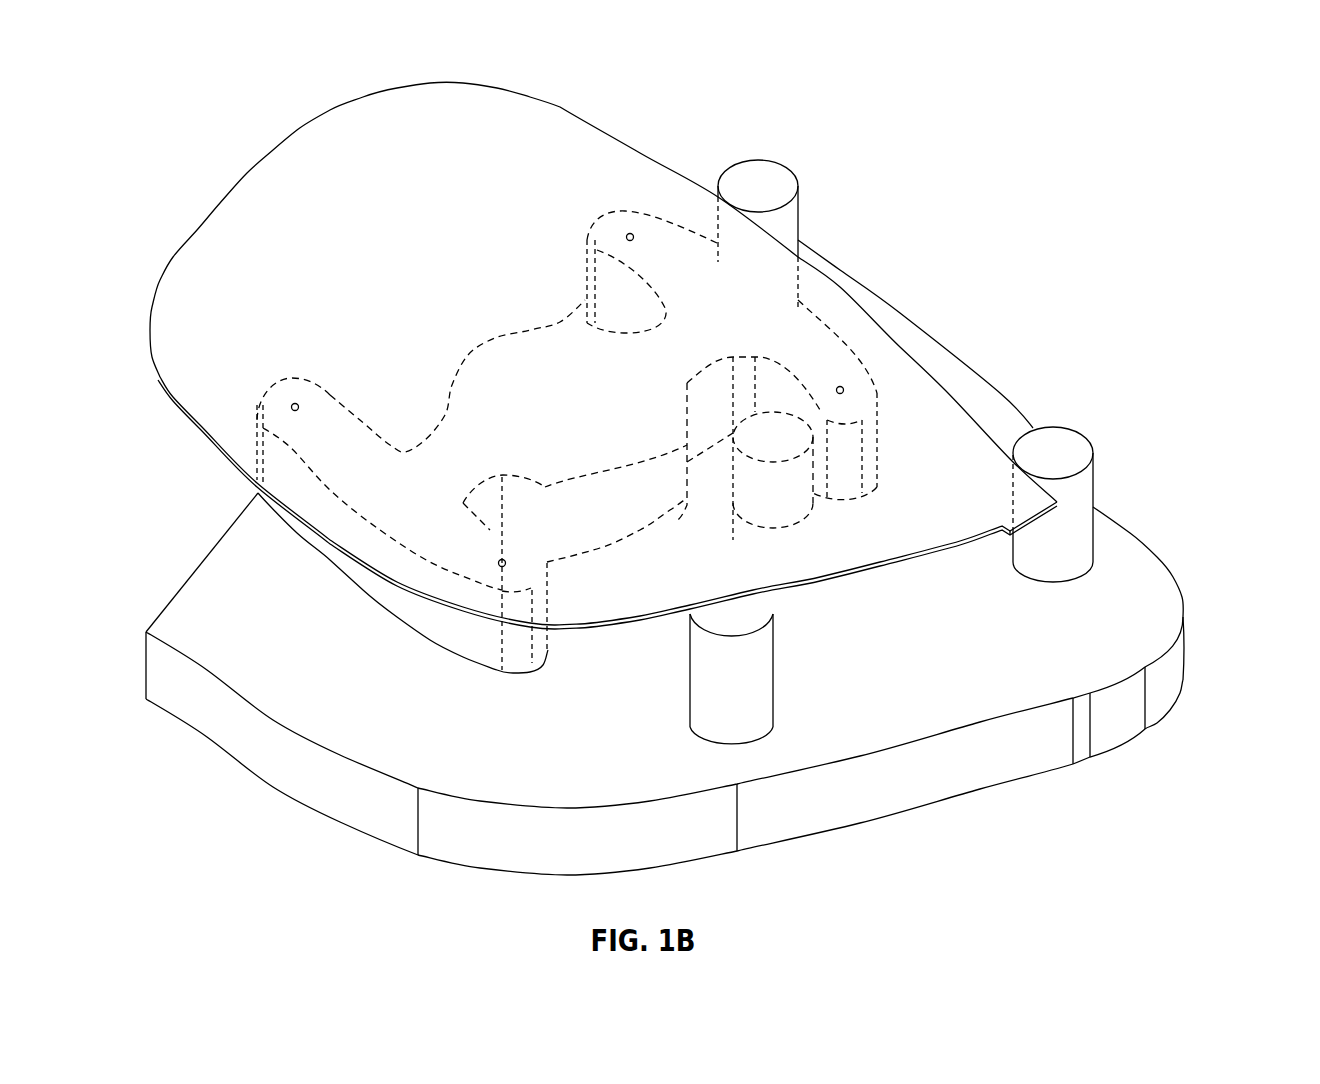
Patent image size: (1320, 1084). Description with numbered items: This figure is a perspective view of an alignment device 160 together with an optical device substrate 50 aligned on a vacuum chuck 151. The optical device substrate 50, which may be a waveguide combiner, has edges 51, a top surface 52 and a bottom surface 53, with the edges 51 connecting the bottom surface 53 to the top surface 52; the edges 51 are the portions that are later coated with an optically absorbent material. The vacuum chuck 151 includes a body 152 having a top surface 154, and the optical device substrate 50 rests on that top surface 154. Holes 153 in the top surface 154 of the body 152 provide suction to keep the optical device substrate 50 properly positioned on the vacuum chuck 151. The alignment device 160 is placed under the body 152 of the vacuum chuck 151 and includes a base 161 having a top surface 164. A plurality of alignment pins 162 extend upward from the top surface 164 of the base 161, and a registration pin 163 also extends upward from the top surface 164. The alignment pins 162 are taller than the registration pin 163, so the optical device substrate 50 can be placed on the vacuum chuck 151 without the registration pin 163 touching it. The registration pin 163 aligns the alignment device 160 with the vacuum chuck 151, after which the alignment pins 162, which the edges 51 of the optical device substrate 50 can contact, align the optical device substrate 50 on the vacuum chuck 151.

The optical device substrate 50 is at (205, 78).
The edges 51 is at (858, 565).
The top surface 52 is at (340, 125).
The bottom surface 53 is at (178, 420).
The vacuum chuck 151 is at (478, 345).
The body 152 is at (475, 652).
The holes 153 is at (632, 233).
The top surface 154 is at (537, 352).
The alignment device 160 is at (1200, 642).
The base 161 is at (255, 752).
The alignment pins 162 is at (775, 185).
The registration pin 163 is at (752, 503).
The top surface 164 is at (228, 575).